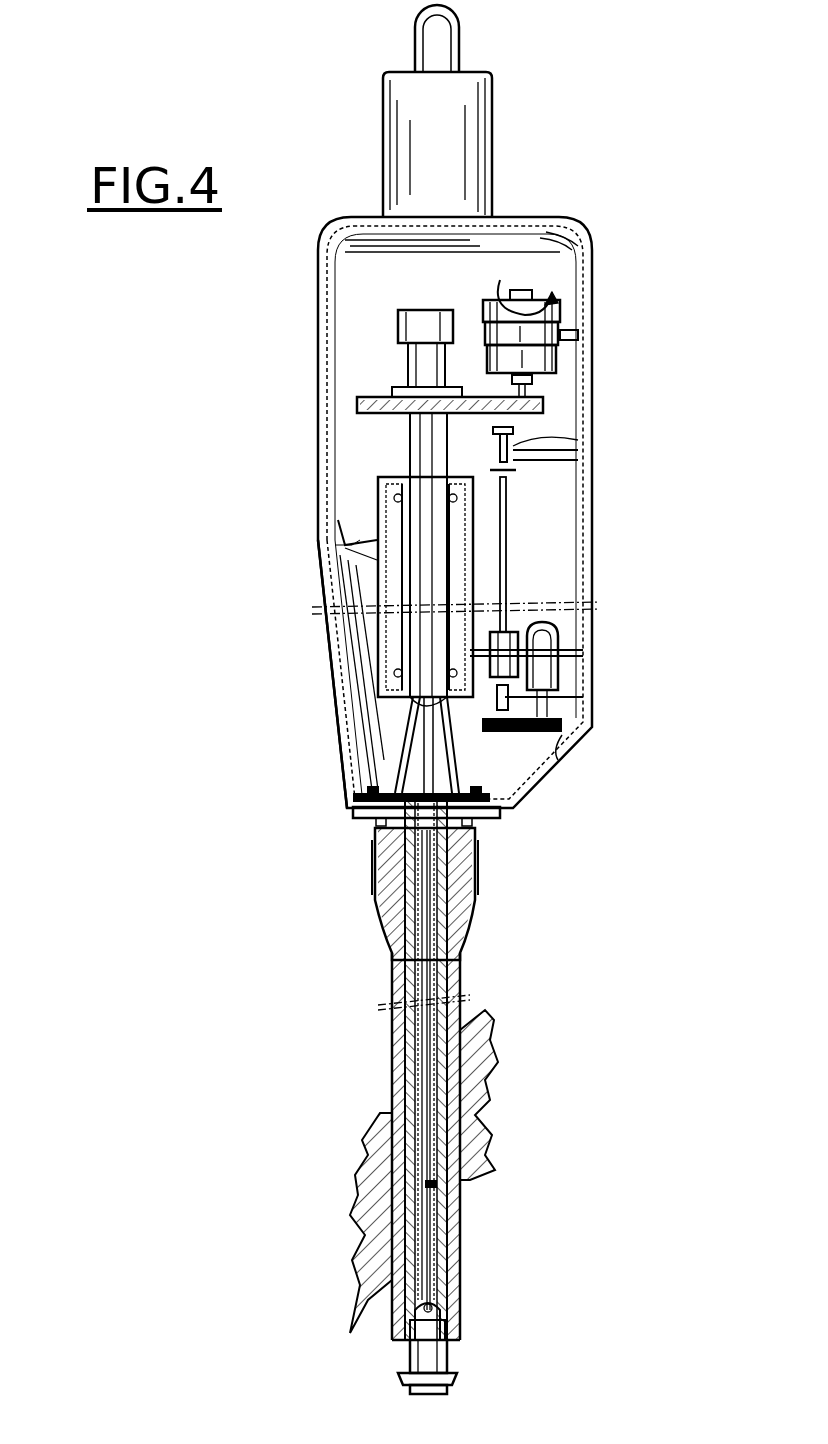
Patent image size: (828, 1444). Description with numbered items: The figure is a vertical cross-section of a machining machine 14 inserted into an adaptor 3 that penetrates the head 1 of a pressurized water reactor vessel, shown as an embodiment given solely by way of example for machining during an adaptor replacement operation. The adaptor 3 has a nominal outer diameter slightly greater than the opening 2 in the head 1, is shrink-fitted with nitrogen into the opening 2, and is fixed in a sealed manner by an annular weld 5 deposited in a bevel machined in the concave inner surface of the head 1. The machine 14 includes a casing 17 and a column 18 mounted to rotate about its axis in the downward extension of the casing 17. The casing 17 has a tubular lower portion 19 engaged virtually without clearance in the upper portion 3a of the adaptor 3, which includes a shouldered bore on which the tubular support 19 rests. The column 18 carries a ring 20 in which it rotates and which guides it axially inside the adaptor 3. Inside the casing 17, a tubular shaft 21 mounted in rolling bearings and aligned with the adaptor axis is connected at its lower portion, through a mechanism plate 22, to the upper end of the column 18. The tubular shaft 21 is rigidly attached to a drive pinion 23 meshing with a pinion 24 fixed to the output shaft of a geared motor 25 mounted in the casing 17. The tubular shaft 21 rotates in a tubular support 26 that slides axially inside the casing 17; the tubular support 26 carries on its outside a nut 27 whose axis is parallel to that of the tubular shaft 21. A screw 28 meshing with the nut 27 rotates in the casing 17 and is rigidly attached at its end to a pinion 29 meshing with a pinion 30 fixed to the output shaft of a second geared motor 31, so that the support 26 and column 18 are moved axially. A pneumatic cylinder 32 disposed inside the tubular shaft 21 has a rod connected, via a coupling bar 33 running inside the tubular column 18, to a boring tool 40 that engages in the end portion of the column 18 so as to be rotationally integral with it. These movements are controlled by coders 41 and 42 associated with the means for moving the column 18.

The vessel head 1 is at (482, 1070).
The opening 2 is at (462, 1110).
The adaptor 3 is at (390, 975).
The upper portion of the adaptor 3a is at (475, 865).
The annular weld 5 is at (395, 1305).
The machine 14 is at (290, 360).
The casing 17 is at (596, 514).
The column 18 is at (405, 1062).
The tubular lower portion 19 is at (385, 925).
The ring 20 is at (458, 1228).
The tubular shaft 21 is at (415, 462).
The mechanism plate 22 is at (400, 774).
The drive pinion 23 is at (357, 404).
The pinion 24 is at (545, 412).
The geared motor 25 is at (590, 296).
The tubular support 26 is at (362, 624).
The nut 27 is at (508, 628).
The screw 28 is at (508, 538).
The pinion 29 is at (500, 734).
The pinion 30 is at (560, 745).
The geared motor 31 is at (560, 628).
The pneumatic cylinder 32 is at (408, 722).
The coupling bar 33 is at (392, 1020).
The boring tool 40 is at (452, 1363).
The coder 41 is at (528, 283).
The coder 42 is at (578, 436).